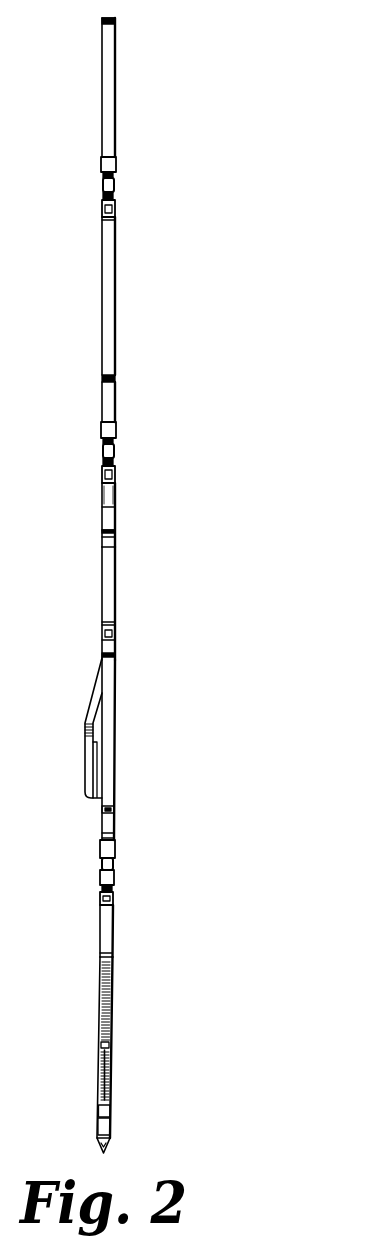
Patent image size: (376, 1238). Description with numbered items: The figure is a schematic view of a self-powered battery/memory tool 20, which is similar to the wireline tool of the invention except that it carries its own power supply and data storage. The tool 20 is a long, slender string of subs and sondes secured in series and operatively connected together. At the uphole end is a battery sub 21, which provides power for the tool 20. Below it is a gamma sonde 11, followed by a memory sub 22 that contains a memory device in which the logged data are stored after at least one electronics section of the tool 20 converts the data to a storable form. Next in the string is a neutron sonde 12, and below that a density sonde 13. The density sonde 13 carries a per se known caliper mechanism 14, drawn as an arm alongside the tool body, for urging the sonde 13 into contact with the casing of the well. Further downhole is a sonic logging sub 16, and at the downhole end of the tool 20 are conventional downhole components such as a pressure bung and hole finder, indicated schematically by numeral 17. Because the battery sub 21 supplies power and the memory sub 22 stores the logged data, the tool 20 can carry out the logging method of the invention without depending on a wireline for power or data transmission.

The tool 20 is at (158, 585).
The battery sub 21 is at (107, 108).
The gamma sonde 11 is at (108, 285).
The memory sub 22 is at (107, 403).
The neutron sonde 12 is at (108, 593).
The density sonde 13 is at (90, 758).
The caliper mechanism 14 is at (118, 774).
The sonic logging sub 16 is at (105, 940).
The pressure bung and hole finder 17 is at (102, 1110).